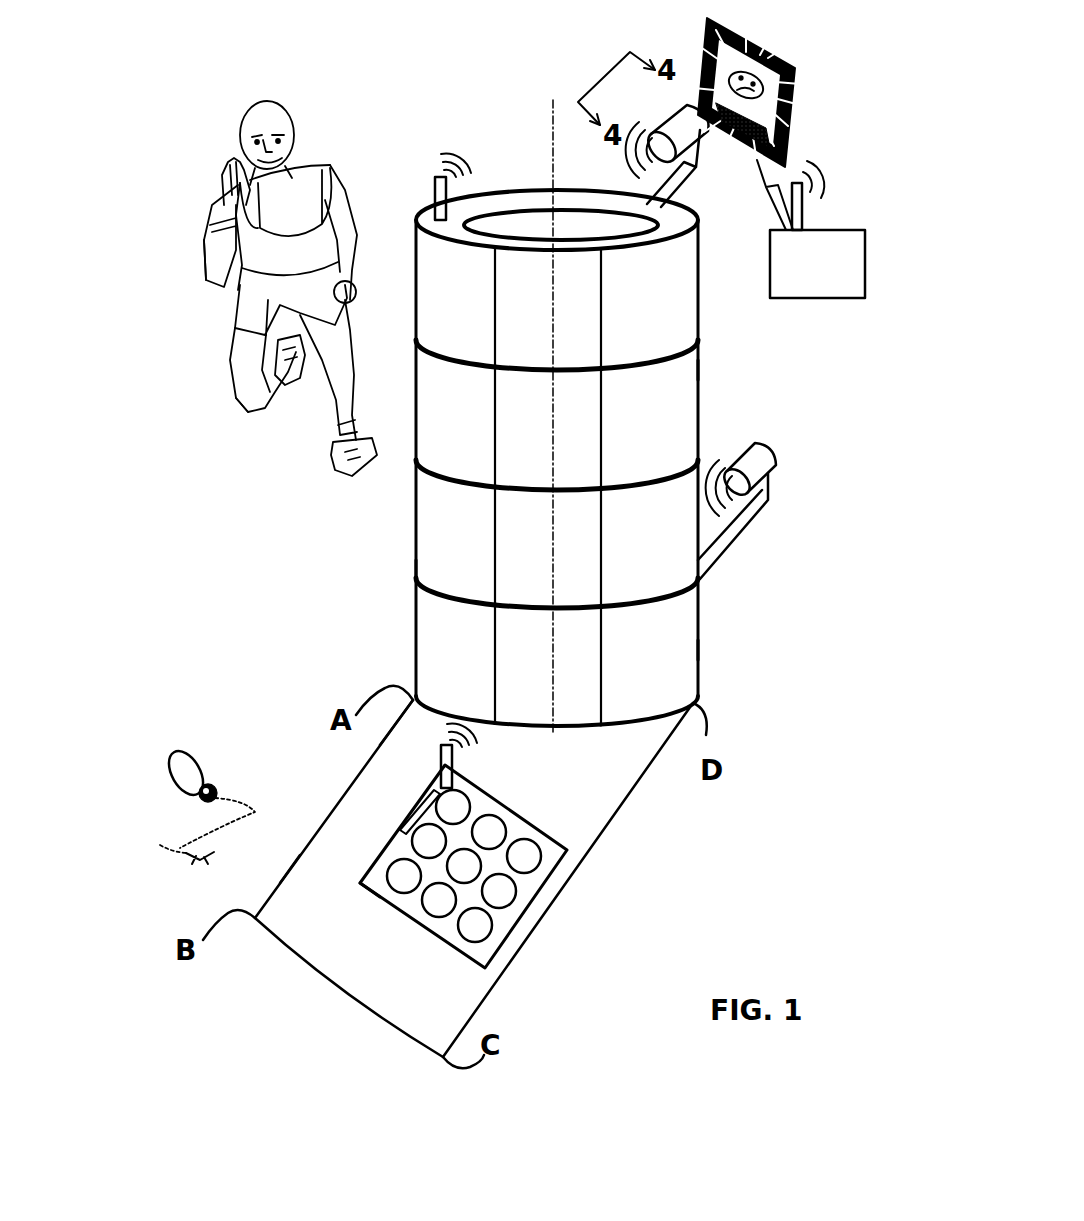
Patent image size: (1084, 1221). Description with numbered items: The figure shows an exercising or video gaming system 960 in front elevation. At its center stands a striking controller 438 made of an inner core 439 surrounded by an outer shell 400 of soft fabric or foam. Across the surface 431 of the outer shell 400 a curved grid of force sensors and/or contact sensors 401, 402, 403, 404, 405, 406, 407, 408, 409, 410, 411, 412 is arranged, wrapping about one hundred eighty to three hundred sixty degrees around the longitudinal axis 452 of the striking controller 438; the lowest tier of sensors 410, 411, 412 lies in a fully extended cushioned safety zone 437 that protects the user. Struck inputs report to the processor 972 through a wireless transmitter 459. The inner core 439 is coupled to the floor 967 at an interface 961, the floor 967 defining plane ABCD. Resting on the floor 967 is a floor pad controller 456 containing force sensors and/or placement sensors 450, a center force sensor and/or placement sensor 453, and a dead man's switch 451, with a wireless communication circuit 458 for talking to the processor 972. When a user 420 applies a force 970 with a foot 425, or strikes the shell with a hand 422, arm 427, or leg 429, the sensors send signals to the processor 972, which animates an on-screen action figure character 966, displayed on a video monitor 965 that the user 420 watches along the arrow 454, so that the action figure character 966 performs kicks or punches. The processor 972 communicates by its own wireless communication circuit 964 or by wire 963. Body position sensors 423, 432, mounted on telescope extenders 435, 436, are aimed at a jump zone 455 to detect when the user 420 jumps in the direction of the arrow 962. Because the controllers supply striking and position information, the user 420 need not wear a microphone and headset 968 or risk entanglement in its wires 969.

The outer shell 400 is at (582, 182).
The force sensor and/or contact sensor 401 is at (484, 312).
The force sensor and/or contact sensor 402 is at (573, 312).
The force sensor and/or contact sensor 403 is at (681, 312).
The force sensor and/or contact sensor 404 is at (484, 442).
The force sensor and/or contact sensor 405 is at (573, 442).
The force sensor and/or contact sensor 406 is at (668, 442).
The force sensor and/or contact sensor 407 is at (484, 562).
The force sensor and/or contact sensor 408 is at (573, 562).
The force sensor and/or contact sensor 409 is at (668, 562).
The force sensor and/or contact sensor 410 is at (476, 677).
The force sensor and/or contact sensor 411 is at (571, 677).
The force sensor and/or contact sensor 412 is at (666, 677).
The inner core 439 is at (624, 243).
The longitudinal axis 452 is at (552, 140).
The arrow 454 is at (456, 104).
The wireless transmitter 459 is at (446, 198).
The wireless communication circuit 458 is at (452, 770).
The body position sensor 423 is at (678, 140).
The telescope extender 435 is at (692, 170).
The body position sensor 432 is at (757, 448).
The telescope extender 436 is at (718, 553).
The safety zone 437 is at (711, 658).
The striking controller 438 is at (738, 368).
The surface 431 is at (401, 556).
The user 420 is at (191, 171).
The hand 422 is at (243, 185).
The arm 427 is at (213, 250).
The leg 429 is at (345, 405).
The foot 425 is at (340, 473).
The jump zone 455 is at (169, 294).
The exercising or video gaming system 960 is at (240, 460).
The force 970 is at (356, 672).
The arrow 962 is at (284, 708).
The microphone and headset 968 is at (178, 770).
The wires 969 is at (165, 840).
The interface 961 is at (708, 708).
The floor 967 is at (426, 977).
The force sensor and/or placement sensor 450 is at (398, 880).
The dead man's switch 451 is at (427, 802).
The center force sensor and/or placement sensor 453 is at (467, 868).
The floor pad controller 456 is at (352, 909).
The wire 963 is at (777, 183).
The wireless communication circuit 964 is at (803, 205).
The video monitor 965 is at (707, 50).
The action figure 966 is at (755, 80).
The processor 972 is at (854, 281).